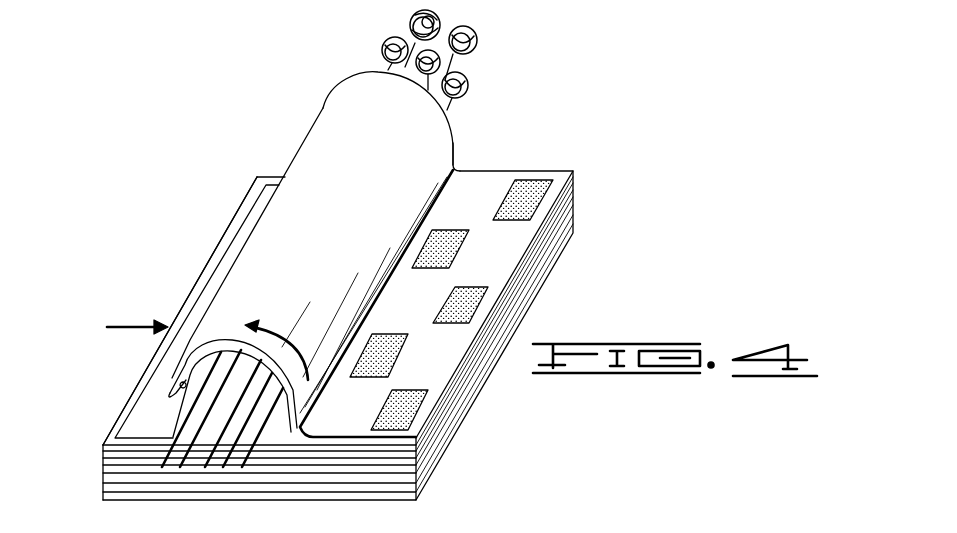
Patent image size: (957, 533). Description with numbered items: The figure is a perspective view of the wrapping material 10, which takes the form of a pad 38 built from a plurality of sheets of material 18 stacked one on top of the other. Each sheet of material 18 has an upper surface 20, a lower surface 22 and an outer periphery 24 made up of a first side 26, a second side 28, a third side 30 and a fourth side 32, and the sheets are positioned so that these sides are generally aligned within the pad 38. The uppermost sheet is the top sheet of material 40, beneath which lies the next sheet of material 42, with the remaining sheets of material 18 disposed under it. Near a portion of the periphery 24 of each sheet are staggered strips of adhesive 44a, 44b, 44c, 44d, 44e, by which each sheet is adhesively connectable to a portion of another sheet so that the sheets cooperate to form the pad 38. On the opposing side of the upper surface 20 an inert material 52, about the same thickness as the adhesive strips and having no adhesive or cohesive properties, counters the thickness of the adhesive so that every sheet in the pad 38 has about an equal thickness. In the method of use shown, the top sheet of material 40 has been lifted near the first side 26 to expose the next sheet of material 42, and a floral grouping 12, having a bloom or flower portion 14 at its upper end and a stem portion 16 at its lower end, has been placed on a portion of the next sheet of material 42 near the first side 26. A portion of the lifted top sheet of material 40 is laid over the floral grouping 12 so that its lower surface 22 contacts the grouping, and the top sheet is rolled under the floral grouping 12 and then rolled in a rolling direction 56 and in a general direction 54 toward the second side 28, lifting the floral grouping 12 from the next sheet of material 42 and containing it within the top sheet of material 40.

The wrapping material 10 is at (478, 133).
The floral grouping 12 is at (480, 43).
The flower portion 14 is at (410, 20).
The stem portion 16 is at (207, 412).
The sheet of material 18 is at (518, 168).
The upper surface 20 is at (315, 138).
The lower surface 22 is at (180, 386).
The outer periphery 24 is at (417, 442).
The first side 26 is at (202, 268).
The second side 28 is at (553, 213).
The third side 30 is at (547, 172).
The fourth side 32 is at (381, 443).
The pad 38 is at (427, 478).
The top sheet of material 40 is at (458, 150).
The next sheet of material 42 is at (108, 442).
The staggered strip of adhesive 44a is at (527, 203).
The staggered strip of adhesive 44b is at (438, 252).
The staggered strip of adhesive 44c is at (463, 307).
The staggered strip of adhesive 44d is at (382, 363).
The staggered strip of adhesive 44e is at (402, 410).
The inert material 52 is at (157, 397).
The general direction 54 is at (123, 327).
The rolling direction 56 is at (282, 345).